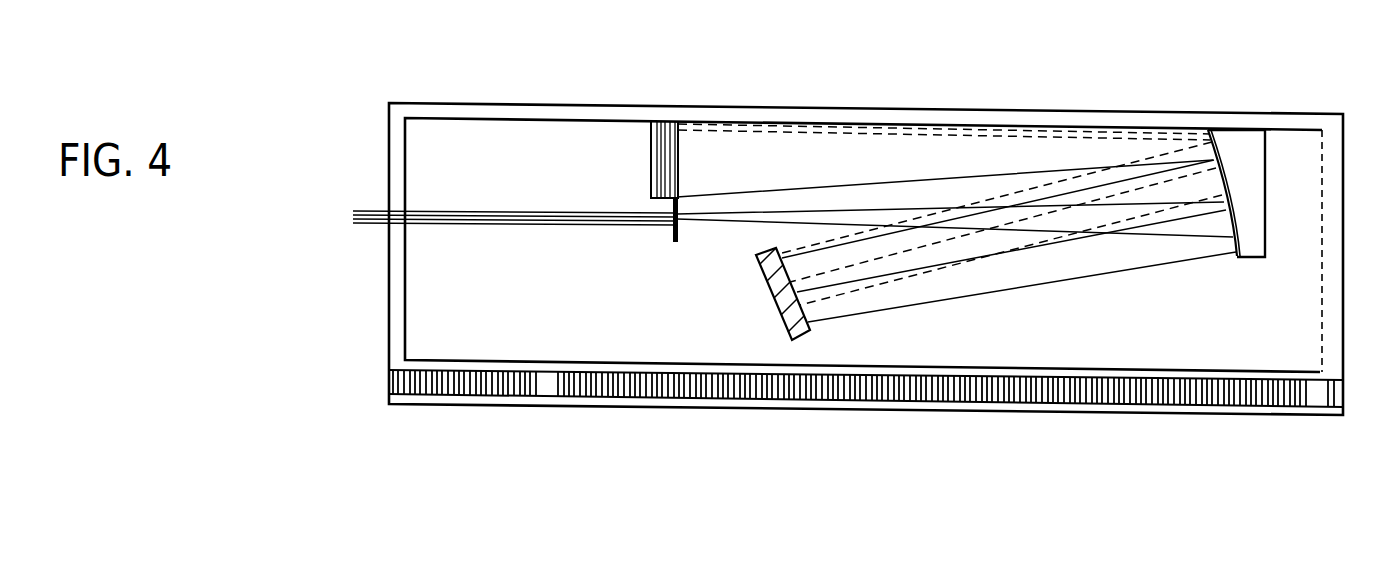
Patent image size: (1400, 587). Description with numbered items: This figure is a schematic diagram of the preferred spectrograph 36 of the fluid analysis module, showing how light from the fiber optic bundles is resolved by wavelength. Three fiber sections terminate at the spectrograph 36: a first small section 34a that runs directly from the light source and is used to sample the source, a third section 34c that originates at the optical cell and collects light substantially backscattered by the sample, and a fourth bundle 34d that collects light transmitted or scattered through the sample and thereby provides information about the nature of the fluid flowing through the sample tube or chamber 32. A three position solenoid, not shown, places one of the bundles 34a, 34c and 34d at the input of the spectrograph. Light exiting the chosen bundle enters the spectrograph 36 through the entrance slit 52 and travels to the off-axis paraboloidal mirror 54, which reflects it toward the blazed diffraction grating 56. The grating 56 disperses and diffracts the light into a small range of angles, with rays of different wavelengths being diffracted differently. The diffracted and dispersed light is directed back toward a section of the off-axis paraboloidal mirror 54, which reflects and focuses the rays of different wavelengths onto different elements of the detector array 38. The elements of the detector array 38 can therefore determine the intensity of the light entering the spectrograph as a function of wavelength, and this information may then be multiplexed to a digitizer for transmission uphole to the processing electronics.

The fluid sample tube 32 is at (1297, 408).
The first small section of fiber optic bundle 34a is at (373, 208).
The third section of fiber optic bundle 34c is at (358, 213).
The fourth fiber optic bundle 34d is at (372, 232).
The spectrograph 36 is at (484, 90).
The detector array 38 is at (652, 134).
The entrance slit 52 is at (673, 236).
The off-axis paraboloidal mirror 54 is at (1265, 166).
The blazed diffraction grating 56 is at (770, 288).